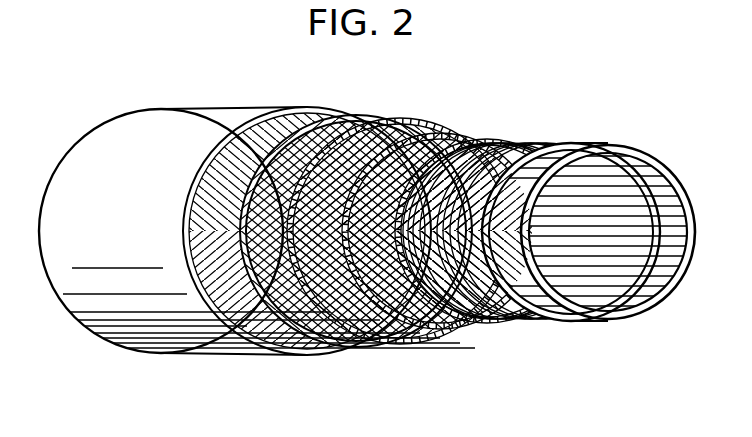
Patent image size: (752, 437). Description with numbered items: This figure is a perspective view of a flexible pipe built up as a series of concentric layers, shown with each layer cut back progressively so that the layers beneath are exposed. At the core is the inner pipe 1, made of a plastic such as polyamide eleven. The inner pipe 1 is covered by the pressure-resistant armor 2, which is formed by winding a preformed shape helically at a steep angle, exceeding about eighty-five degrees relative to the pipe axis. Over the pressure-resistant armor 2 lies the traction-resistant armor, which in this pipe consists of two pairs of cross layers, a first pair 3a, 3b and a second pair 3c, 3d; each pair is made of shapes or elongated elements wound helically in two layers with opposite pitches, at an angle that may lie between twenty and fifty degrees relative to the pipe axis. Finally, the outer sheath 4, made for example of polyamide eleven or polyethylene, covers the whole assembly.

The inner pipe 1 is at (571, 146).
The pressure-resistant armor 2 is at (490, 150).
The cross layer 3a is at (410, 150).
The cross layer 3b is at (352, 150).
The cross layer 3c is at (280, 163).
The cross layer 3d is at (238, 163).
The outer sheath 4 is at (150, 112).